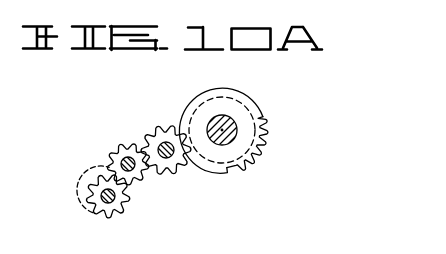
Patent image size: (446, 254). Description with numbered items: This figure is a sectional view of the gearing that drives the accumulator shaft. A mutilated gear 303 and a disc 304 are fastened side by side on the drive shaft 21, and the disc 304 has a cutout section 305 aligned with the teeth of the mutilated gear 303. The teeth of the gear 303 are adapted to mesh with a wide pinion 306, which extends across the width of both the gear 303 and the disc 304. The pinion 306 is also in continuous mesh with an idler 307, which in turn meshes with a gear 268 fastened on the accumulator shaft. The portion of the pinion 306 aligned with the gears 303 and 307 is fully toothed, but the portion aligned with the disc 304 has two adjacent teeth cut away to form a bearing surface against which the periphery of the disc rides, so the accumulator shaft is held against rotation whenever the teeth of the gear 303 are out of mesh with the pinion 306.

The drive shaft 21 is at (229, 118).
The mutilated gear 303 is at (258, 135).
The disc 304 is at (259, 111).
The cutout section 305 is at (229, 165).
The wide pinion 306 is at (161, 125).
The idler 307 is at (133, 177).
The gear 268 is at (127, 202).